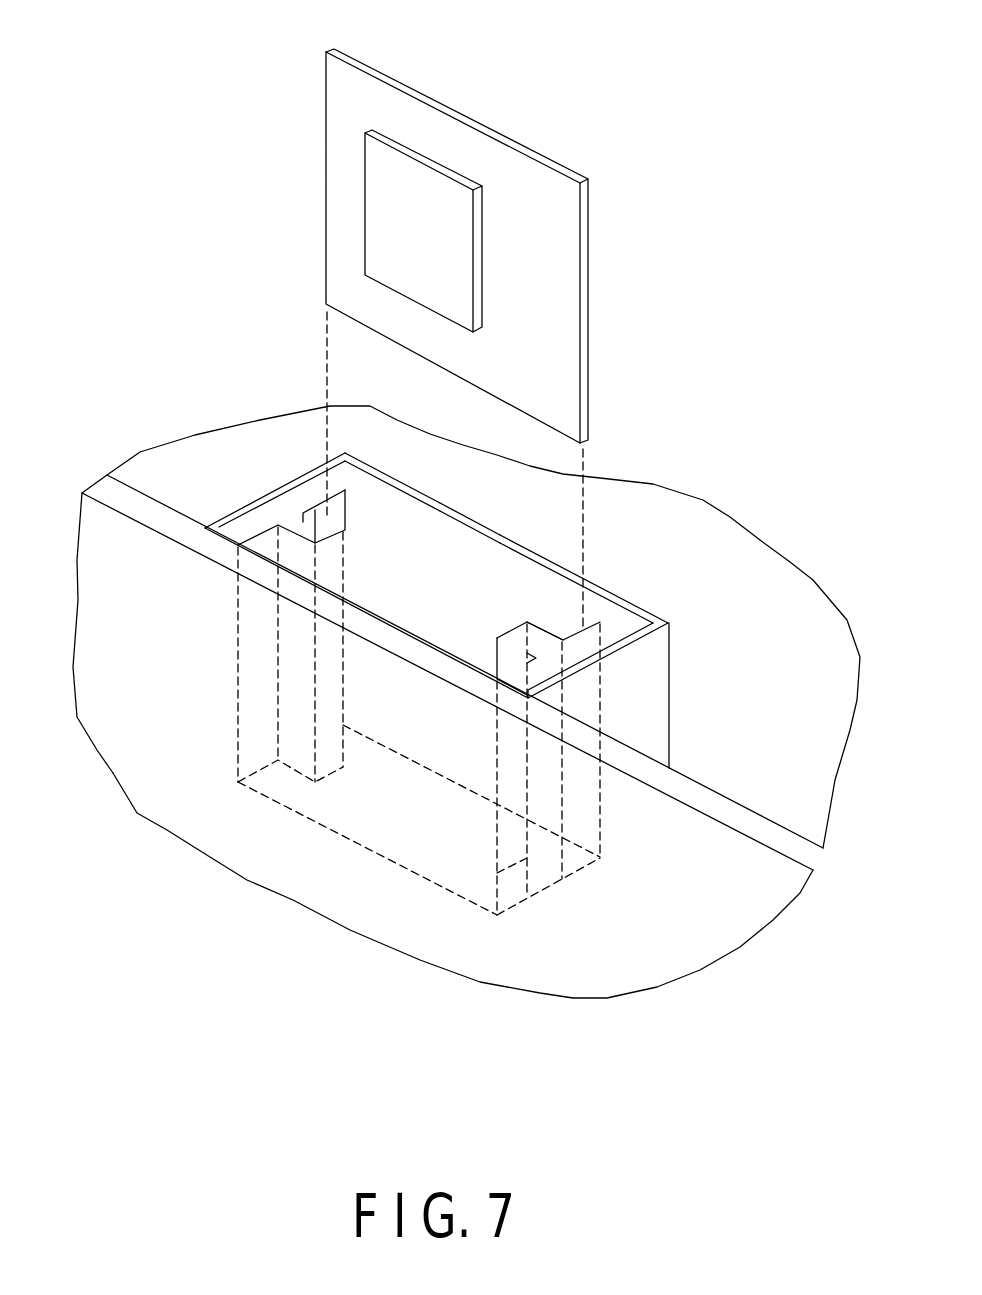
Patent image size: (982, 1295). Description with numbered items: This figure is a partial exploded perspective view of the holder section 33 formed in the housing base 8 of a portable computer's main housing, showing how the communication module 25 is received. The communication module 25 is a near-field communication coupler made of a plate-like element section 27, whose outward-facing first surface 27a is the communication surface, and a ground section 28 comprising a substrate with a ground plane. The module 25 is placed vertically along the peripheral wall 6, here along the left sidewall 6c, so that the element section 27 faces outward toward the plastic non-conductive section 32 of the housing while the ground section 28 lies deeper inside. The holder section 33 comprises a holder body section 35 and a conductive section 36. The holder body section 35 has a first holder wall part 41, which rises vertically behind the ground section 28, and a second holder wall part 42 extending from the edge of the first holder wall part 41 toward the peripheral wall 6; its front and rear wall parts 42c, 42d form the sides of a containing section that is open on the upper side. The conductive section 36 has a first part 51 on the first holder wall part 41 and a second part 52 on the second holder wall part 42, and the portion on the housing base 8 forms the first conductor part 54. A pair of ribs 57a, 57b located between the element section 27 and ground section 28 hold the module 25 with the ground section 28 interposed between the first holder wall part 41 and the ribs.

The peripheral wall 6 is at (448, 739).
The left sidewall 6c is at (565, 977).
The housing base 8 is at (737, 923).
The communication module 25 is at (419, 327).
The element section 27 is at (366, 231).
The first surface 27a is at (468, 243).
The ground section 28 is at (410, 122).
The non-conductive section 32 is at (390, 635).
The holder section 33 is at (479, 574).
The holder body section 35 is at (469, 516).
The conductive section 36 is at (398, 485).
The first holder wall part 41 is at (503, 552).
The second holder wall part 42 is at (463, 639).
The front wall part 42c is at (619, 718).
The rear wall part 42d is at (269, 573).
The first part 51 is at (438, 503).
The second part 52 is at (575, 672).
The first conductor part 54 is at (558, 567).
The rib 57a is at (313, 507).
The rib 57b is at (531, 636).